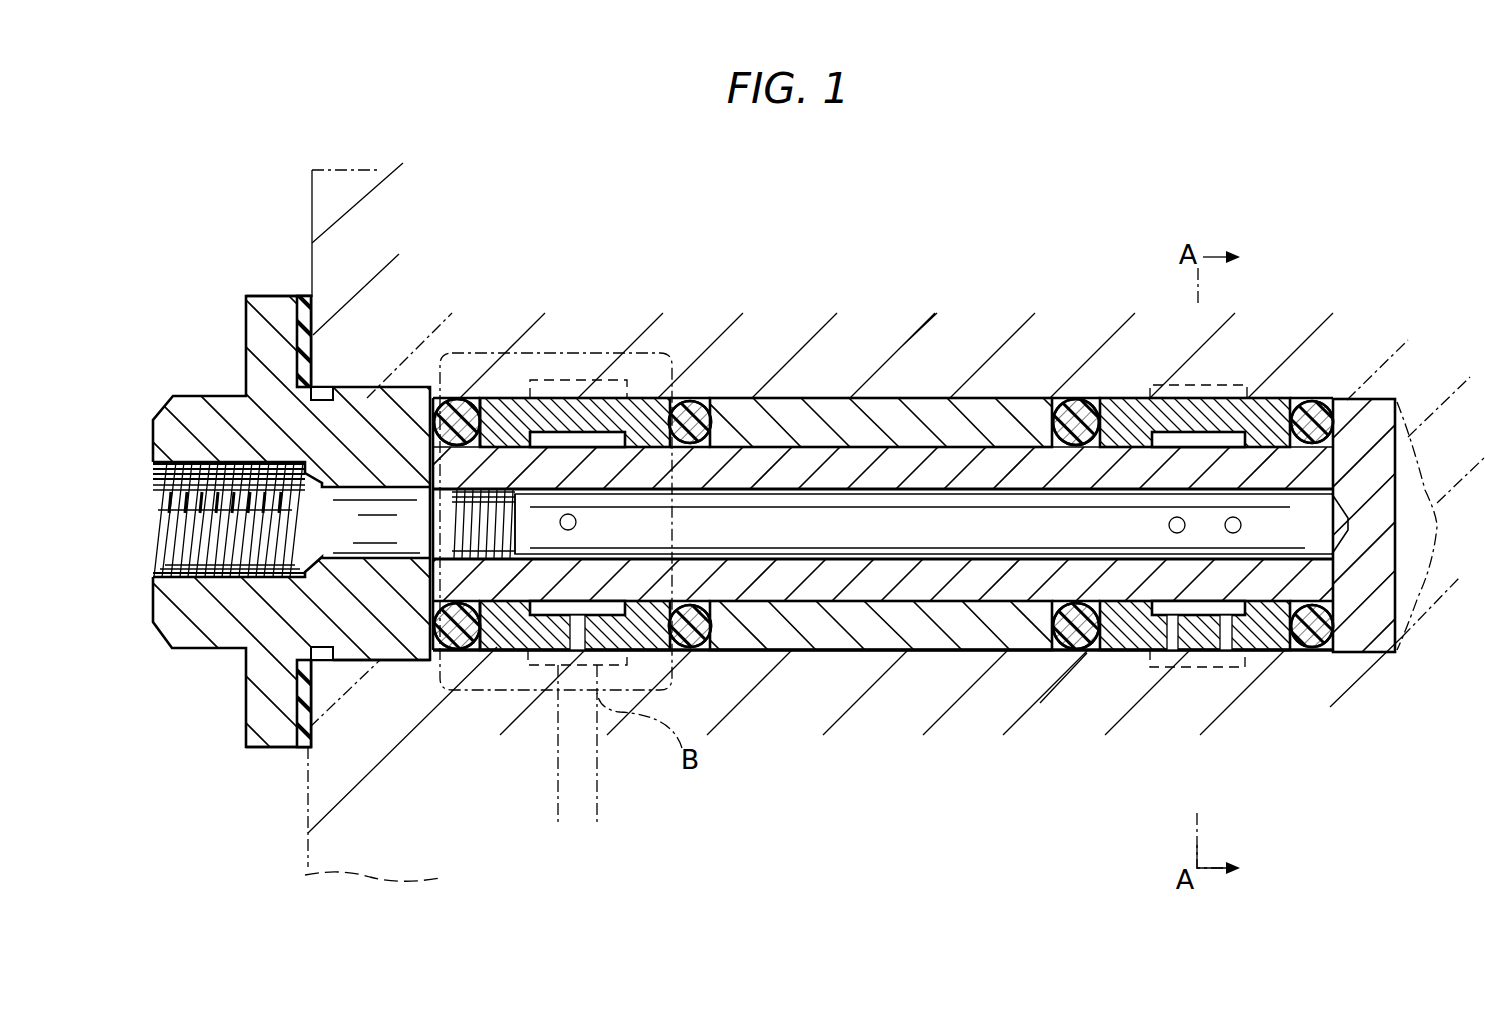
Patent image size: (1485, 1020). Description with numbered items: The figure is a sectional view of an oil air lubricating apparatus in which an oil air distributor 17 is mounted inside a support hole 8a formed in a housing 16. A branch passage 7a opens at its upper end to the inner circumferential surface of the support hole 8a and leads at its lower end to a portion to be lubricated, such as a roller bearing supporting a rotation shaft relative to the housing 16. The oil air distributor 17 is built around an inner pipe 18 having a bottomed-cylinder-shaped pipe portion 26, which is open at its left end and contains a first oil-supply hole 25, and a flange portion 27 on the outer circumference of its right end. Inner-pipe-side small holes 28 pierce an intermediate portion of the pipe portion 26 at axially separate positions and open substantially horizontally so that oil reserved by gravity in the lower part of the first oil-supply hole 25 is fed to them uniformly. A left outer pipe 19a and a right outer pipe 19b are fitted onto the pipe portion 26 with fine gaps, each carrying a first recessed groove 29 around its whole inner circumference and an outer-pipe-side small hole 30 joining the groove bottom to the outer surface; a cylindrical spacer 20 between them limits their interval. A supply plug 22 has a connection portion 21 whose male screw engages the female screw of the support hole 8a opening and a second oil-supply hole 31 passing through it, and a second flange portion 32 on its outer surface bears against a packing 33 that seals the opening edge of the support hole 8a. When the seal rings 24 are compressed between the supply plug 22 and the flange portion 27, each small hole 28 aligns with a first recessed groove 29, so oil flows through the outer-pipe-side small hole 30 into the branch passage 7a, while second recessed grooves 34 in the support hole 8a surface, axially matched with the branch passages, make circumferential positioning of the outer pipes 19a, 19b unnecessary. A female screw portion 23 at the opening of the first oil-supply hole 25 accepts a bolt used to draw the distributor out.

The branch passage 7a is at (595, 762).
The support hole 8a is at (912, 646).
The housing 16 is at (322, 763).
The oil air distributor 17 is at (948, 372).
The inner pipe 18 is at (816, 596).
The outer pipe 19a is at (503, 650).
The outer pipe 19b is at (1286, 647).
The cylindrical spacer 20 is at (975, 638).
The connection portion 21 is at (373, 662).
The supply plug 22 is at (238, 410).
The female screw portion 23 is at (307, 638).
The seal ring 24 is at (452, 398).
The first oil-supply hole 25 is at (822, 492).
The pipe portion 26 is at (900, 460).
The flange portion 27 is at (1372, 423).
The inner-pipe-side small hole 28 is at (577, 513).
The first recessed groove 29 is at (585, 432).
The outer-pipe-side small hole 30 is at (574, 667).
The second oil-supply hole 31 is at (370, 490).
The second flange portion 32 is at (268, 296).
The packing 33 is at (315, 392).
The second recessed groove 34 is at (558, 392).